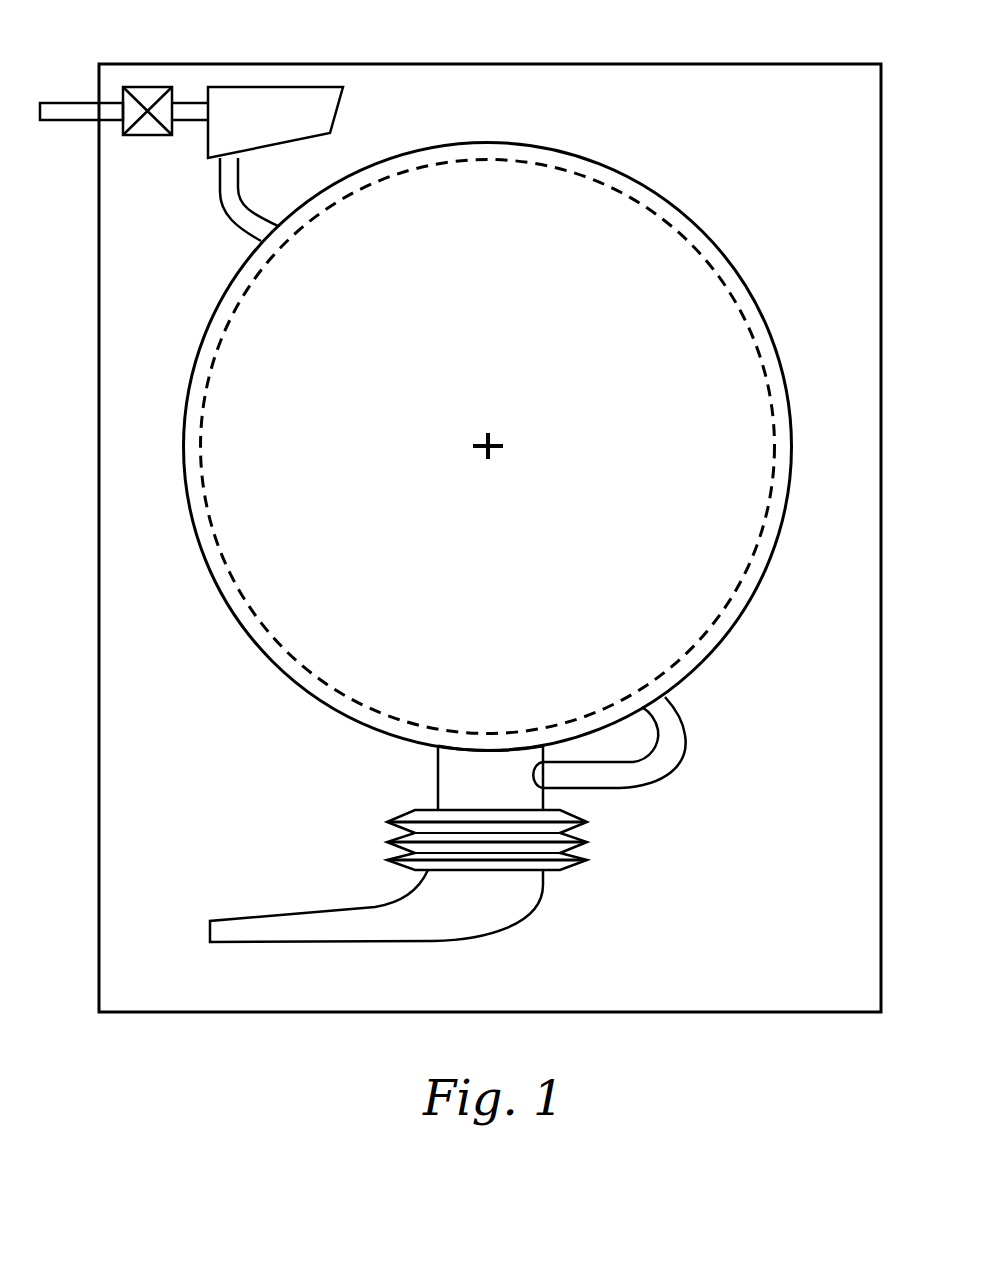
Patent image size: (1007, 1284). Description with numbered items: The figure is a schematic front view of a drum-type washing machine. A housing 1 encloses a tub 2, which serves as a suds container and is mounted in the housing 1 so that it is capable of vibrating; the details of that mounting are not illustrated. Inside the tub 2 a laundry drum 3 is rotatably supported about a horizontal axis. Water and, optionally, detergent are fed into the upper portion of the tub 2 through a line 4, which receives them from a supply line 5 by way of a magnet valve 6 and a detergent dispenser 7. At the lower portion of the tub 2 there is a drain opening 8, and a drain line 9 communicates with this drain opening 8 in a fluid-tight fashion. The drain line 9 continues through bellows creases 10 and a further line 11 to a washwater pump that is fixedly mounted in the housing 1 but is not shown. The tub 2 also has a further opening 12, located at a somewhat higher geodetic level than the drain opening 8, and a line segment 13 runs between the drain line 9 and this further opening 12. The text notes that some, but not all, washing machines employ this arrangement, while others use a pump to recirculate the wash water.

The housing 1 is at (436, 63).
The tub 2 is at (579, 151).
The laundry drum 3 is at (643, 199).
The line 4 is at (222, 203).
The supply line 5 is at (63, 102).
The magnet valve 6 is at (148, 87).
The detergent dispenser 7 is at (278, 86).
The drain opening 8 is at (497, 751).
The drain line 9 is at (435, 772).
The bellows creases 10 is at (397, 842).
The further line 11 is at (278, 913).
The further opening 12 is at (643, 688).
The line segment 13 is at (688, 760).